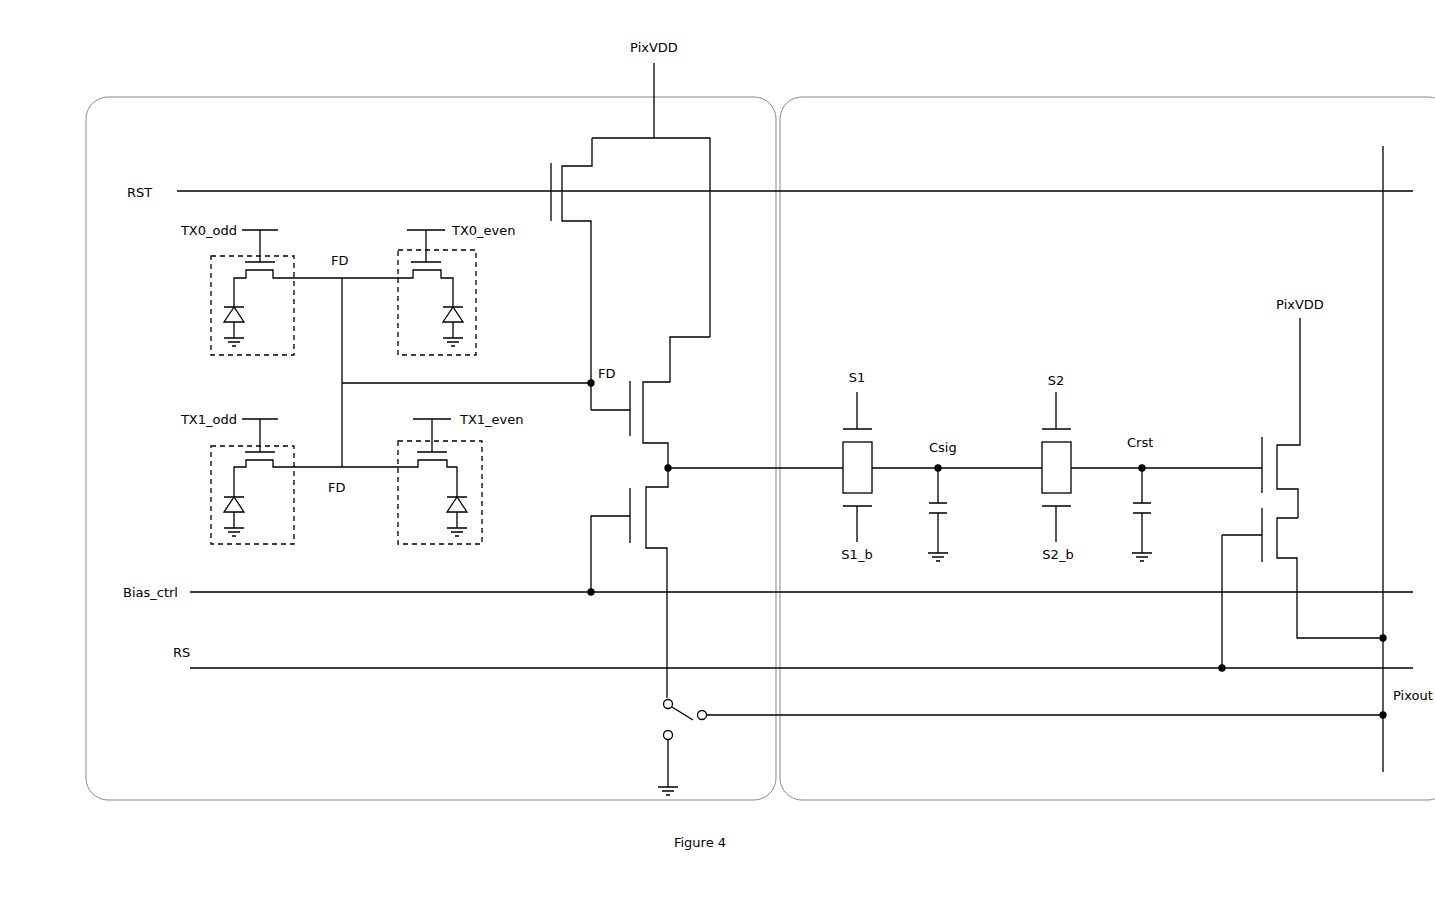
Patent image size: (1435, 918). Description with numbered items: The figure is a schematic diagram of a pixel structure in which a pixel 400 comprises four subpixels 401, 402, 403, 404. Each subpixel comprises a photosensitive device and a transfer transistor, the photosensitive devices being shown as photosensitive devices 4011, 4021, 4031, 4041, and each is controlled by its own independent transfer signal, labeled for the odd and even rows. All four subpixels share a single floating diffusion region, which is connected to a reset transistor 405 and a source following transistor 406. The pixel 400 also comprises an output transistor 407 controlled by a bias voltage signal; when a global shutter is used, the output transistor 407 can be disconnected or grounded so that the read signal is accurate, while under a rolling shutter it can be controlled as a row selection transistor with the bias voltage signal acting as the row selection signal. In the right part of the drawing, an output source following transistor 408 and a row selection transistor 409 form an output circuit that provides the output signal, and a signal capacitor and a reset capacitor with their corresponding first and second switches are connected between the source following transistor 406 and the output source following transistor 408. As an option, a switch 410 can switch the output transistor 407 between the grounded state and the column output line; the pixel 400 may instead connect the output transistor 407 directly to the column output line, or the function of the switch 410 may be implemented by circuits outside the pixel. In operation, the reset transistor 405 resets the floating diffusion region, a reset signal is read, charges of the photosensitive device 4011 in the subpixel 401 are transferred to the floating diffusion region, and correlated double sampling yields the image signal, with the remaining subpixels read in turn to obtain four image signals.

The pixel 400 is at (1150, 72).
The subpixel 401 is at (257, 292).
The subpixel 402 is at (427, 292).
The subpixel 403 is at (257, 481).
The subpixel 404 is at (429, 481).
The photosensitive device 4011 is at (252, 326).
The photosensitive device 4021 is at (439, 326).
The photosensitive device 4031 is at (252, 516).
The photosensitive device 4041 is at (442, 516).
The reset transistor 405 is at (622, 236).
The source following transistor 406 is at (650, 402).
The output transistor 407 is at (636, 583).
The output source following transistor 408 is at (1294, 418).
The row selection transistor 409 is at (1302, 588).
The switch 410 is at (1006, 748).